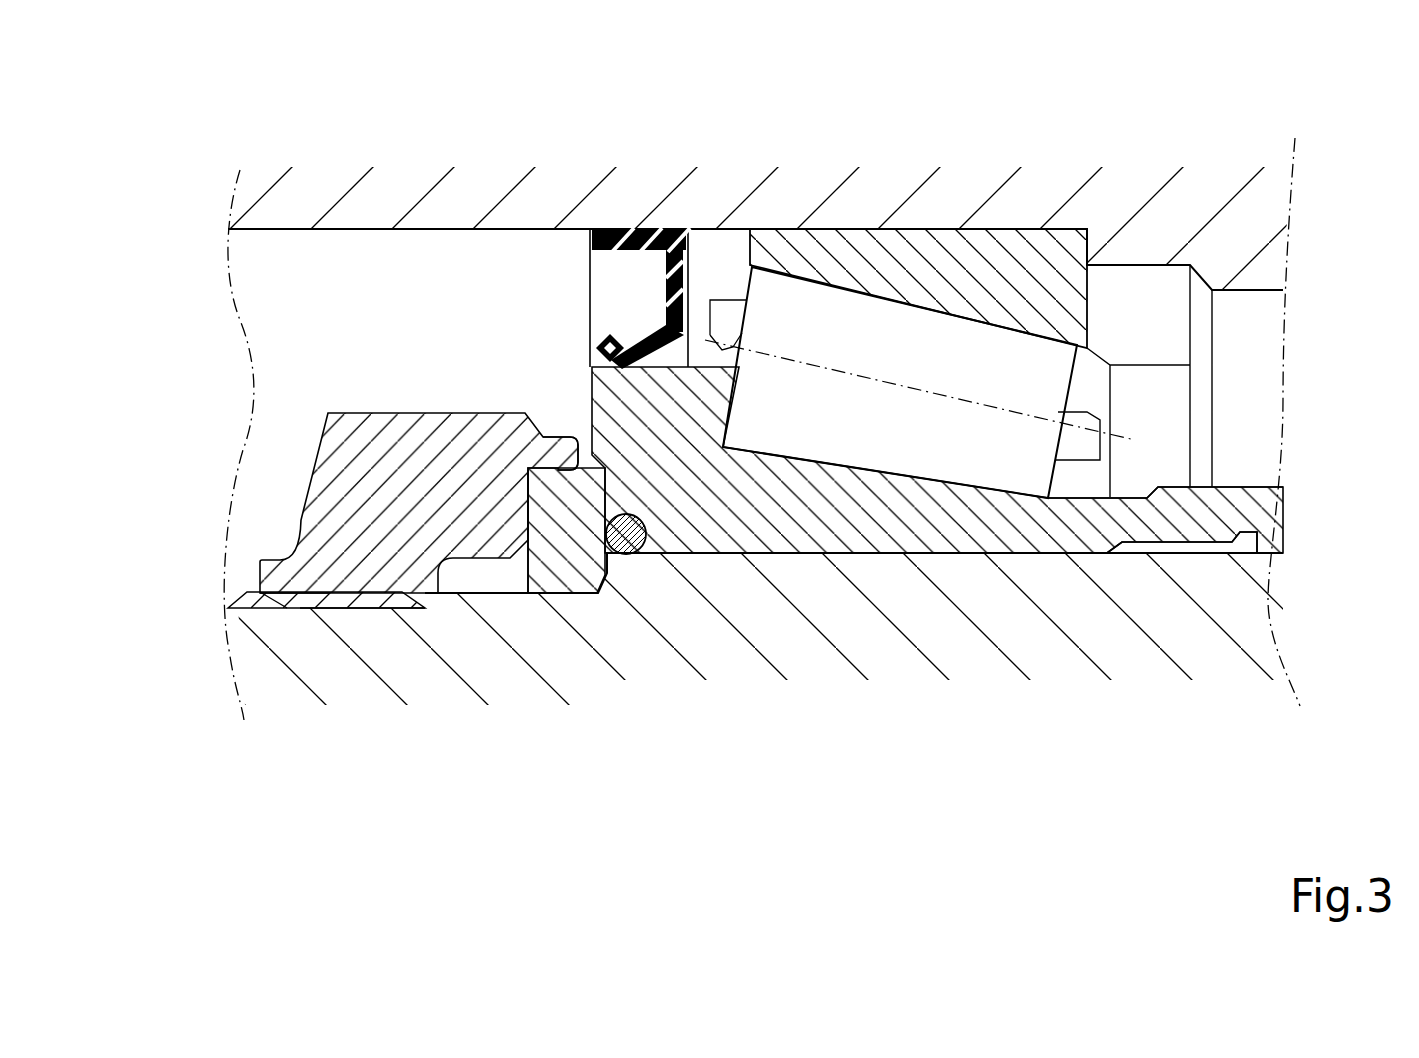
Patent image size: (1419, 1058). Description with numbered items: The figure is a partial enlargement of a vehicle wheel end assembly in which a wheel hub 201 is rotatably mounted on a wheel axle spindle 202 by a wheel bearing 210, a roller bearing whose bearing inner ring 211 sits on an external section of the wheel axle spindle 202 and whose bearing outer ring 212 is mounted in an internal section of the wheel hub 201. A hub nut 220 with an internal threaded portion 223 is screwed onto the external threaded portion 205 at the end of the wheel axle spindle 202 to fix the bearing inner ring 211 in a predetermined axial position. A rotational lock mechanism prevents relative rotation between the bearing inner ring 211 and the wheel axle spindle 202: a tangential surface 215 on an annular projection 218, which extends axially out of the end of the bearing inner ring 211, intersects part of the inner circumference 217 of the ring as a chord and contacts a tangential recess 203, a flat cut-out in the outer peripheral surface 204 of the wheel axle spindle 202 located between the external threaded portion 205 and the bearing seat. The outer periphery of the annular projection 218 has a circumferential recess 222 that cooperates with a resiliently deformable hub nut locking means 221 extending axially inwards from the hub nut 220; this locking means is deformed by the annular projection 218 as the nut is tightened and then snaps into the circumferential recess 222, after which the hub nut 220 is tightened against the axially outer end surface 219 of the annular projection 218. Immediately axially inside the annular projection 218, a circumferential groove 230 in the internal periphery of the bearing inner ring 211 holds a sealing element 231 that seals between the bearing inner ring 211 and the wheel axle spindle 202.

The wheel hub 201 is at (543, 183).
The wheel axle spindle 202 is at (1087, 665).
The tangential recess 203 is at (508, 577).
The outer peripheral surface 204 is at (937, 553).
The external threaded portion 205 is at (322, 592).
The wheel bearing 210 is at (1045, 125).
The bearing inner ring 211 is at (873, 528).
The bearing outer ring 212 is at (853, 263).
The tangential surface 215 is at (563, 596).
The inner circumference 217 is at (748, 556).
The annular projection 218 is at (578, 553).
The axially outer end surface 219 is at (528, 521).
The hub nut 220 is at (367, 513).
The hub nut locking means 221 is at (568, 420).
The circumferential recess 222 is at (563, 437).
The internal threaded portion 223 is at (397, 609).
The circumferential groove 230 is at (627, 507).
The sealing element 231 is at (640, 555).